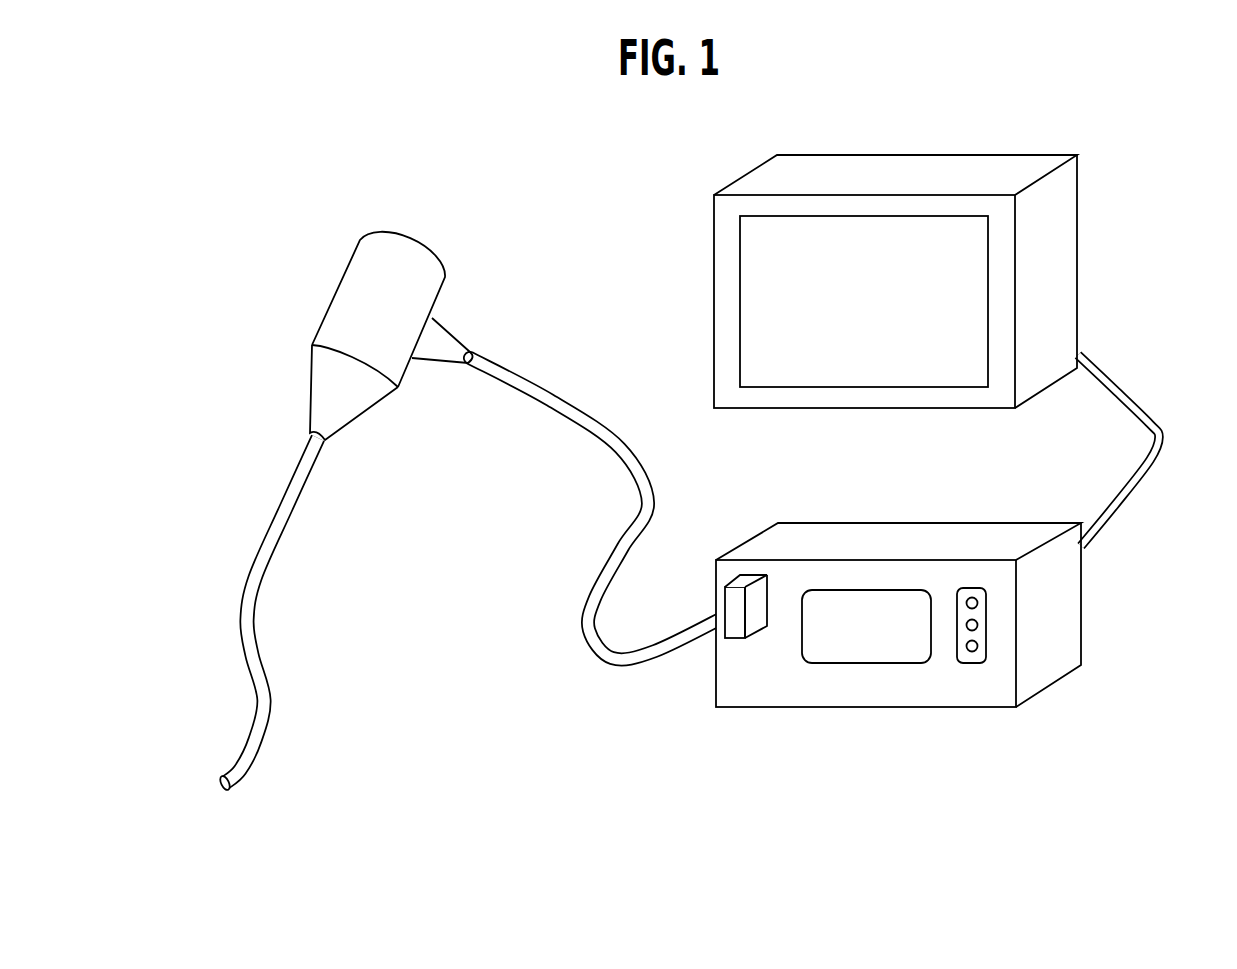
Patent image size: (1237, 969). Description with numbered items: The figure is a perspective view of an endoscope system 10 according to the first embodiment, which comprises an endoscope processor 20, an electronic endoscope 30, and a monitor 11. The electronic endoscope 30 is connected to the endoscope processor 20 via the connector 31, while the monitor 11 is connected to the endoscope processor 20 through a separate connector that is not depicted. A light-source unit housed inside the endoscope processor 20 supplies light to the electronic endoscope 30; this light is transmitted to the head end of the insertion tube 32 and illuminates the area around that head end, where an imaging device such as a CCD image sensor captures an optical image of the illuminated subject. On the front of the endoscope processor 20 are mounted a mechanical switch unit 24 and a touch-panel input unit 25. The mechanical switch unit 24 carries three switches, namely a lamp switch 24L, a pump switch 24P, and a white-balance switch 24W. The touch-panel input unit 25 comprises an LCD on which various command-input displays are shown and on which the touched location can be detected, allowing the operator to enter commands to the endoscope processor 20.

The endoscope system 10 is at (900, 912).
The monitor 11 is at (893, 155).
The endoscope processor 20 is at (866, 708).
The mechanical switch unit 24 is at (1050, 565).
The lamp switch 24L is at (980, 603).
The pump switch 24P is at (980, 624).
The white-balance switch 24W is at (980, 645).
The touch-panel input unit 25 is at (865, 590).
The electronic endoscope 30 is at (369, 228).
The connector 31 is at (736, 639).
The insertion tube 32 is at (261, 591).